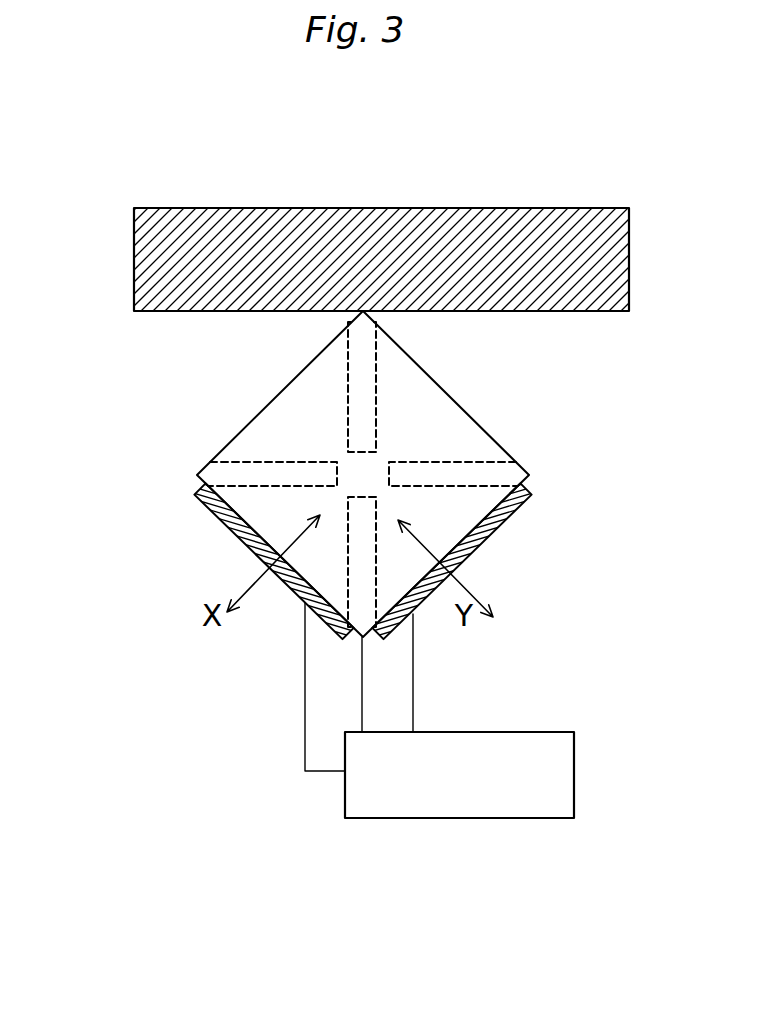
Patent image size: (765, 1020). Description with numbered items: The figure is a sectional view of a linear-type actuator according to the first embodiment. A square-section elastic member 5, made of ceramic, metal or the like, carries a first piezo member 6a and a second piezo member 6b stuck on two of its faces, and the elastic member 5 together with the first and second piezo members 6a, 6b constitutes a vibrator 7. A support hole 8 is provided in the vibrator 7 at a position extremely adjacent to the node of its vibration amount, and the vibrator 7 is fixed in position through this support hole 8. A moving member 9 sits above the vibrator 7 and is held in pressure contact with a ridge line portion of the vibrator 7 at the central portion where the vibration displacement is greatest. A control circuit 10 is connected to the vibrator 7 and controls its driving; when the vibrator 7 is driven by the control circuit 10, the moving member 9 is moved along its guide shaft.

The moving member 9 is at (565, 262).
The support hole 8 is at (260, 460).
The elastic member 5 is at (457, 507).
The first piezo member 6a is at (288, 587).
The second piezo member 6b is at (467, 565).
The vibrator 7 is at (409, 496).
The control circuit 10 is at (345, 798).